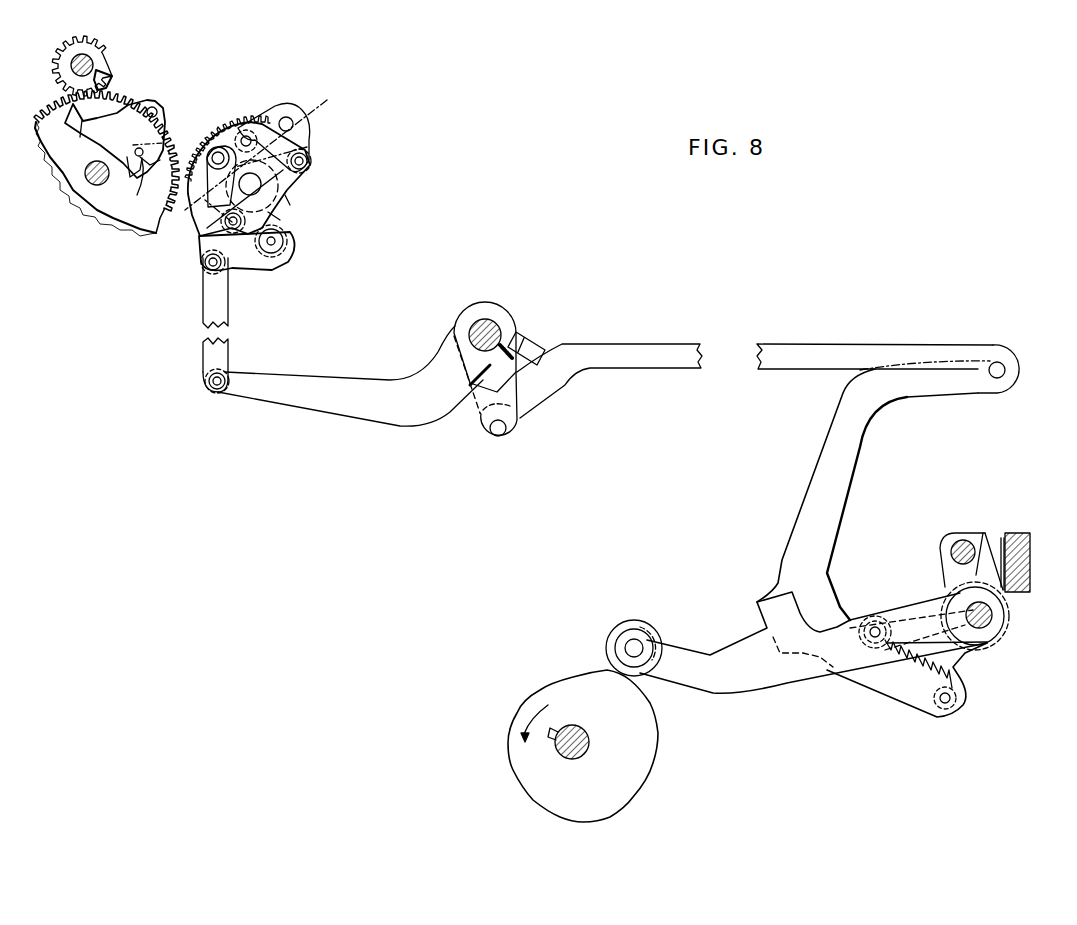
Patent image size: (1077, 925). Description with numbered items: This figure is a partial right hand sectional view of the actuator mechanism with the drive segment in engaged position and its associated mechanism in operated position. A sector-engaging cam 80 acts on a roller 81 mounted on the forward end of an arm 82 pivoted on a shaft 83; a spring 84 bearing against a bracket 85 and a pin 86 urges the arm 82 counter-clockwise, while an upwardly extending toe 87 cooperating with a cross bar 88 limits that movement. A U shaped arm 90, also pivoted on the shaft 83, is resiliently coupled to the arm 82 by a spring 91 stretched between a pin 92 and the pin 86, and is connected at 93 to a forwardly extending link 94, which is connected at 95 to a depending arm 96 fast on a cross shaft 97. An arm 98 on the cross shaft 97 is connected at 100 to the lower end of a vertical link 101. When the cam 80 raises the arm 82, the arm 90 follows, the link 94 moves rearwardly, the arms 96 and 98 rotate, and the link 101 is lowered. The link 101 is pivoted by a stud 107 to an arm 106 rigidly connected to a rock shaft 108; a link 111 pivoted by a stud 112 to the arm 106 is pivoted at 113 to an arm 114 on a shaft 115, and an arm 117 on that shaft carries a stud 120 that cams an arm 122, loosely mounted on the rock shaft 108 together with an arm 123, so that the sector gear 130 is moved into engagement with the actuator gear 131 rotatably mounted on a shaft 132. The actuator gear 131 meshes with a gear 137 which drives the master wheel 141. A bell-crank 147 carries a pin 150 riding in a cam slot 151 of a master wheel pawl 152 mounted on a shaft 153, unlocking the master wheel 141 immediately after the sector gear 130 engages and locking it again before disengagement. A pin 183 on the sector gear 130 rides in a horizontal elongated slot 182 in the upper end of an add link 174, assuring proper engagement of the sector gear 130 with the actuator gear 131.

The sector-engaging cam 80 is at (512, 740).
The roller 81 is at (606, 648).
The arm 82 is at (716, 680).
The shaft 83 is at (1002, 637).
The spring 84 is at (993, 647).
The bracket 85 is at (1028, 578).
The pin 86 is at (878, 622).
The toe 87 is at (992, 545).
The cross bar 88 is at (965, 540).
The U shaped arm 90 is at (852, 465).
The spring 91 is at (892, 683).
The pin 92 is at (940, 712).
The connection 93 is at (1005, 375).
The link 94 is at (612, 360).
The connection 95 is at (494, 437).
The depending arm 96 is at (480, 395).
The cross shaft 97 is at (488, 322).
The arm 98 is at (352, 387).
The connection 100 is at (213, 392).
The vertical link 101 is at (205, 347).
The arm 106 is at (205, 242).
The stud 107 is at (205, 266).
The rock shaft 108 is at (276, 250).
The link 111 is at (285, 182).
The stud 112 is at (222, 227).
The pivot 113 is at (310, 162).
The arm 114 is at (306, 156).
The shaft 115 is at (290, 124).
The arm 117 is at (262, 133).
The stud 120 is at (247, 135).
The arm 122 is at (283, 206).
The arm 123 is at (282, 220).
The sector gear 130 is at (200, 158).
The actuator gear 131 is at (116, 205).
The shaft 132 is at (86, 180).
The gear 137 is at (100, 77).
The master wheel 141 is at (56, 67).
The bell-crank 147 is at (158, 160).
The pin 150 is at (128, 168).
The cam slot 151 is at (143, 188).
The master wheel pawl 152 is at (95, 130).
The shaft 153 is at (158, 112).
The add link 174 is at (207, 213).
The horizontal elongated slot 182 is at (221, 167).
The pin 183 is at (219, 176).